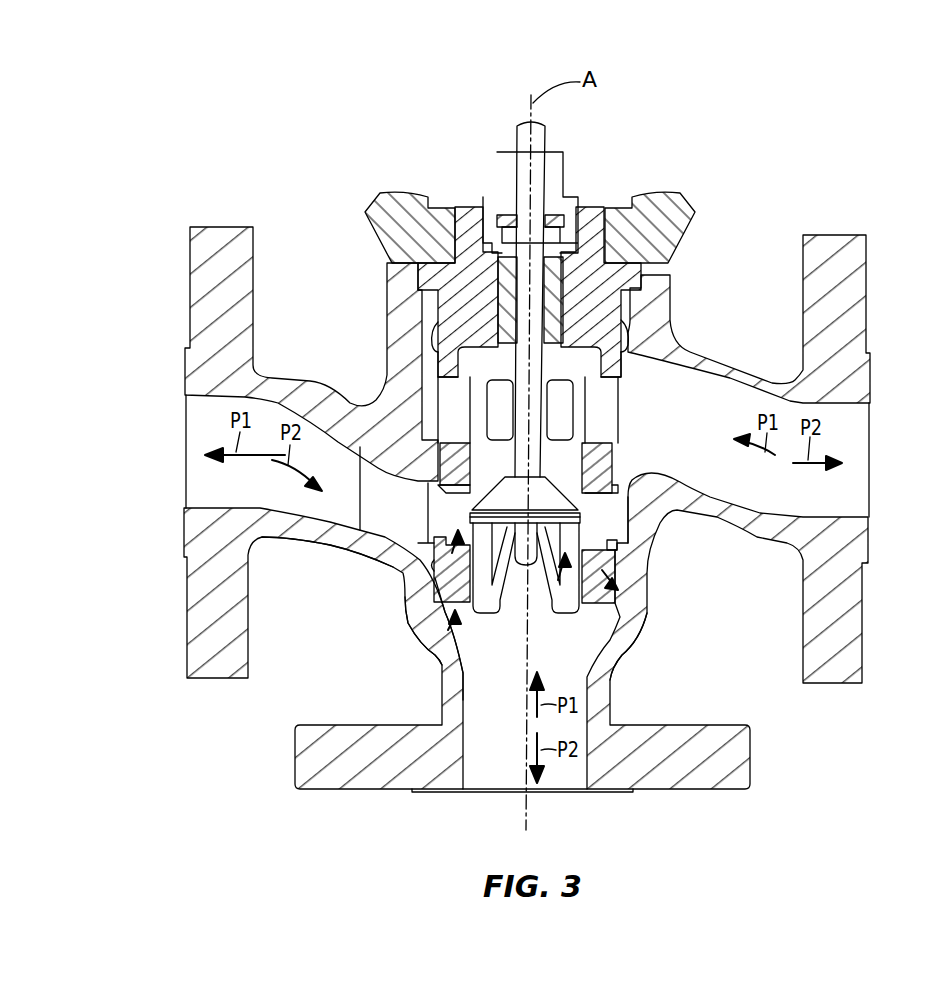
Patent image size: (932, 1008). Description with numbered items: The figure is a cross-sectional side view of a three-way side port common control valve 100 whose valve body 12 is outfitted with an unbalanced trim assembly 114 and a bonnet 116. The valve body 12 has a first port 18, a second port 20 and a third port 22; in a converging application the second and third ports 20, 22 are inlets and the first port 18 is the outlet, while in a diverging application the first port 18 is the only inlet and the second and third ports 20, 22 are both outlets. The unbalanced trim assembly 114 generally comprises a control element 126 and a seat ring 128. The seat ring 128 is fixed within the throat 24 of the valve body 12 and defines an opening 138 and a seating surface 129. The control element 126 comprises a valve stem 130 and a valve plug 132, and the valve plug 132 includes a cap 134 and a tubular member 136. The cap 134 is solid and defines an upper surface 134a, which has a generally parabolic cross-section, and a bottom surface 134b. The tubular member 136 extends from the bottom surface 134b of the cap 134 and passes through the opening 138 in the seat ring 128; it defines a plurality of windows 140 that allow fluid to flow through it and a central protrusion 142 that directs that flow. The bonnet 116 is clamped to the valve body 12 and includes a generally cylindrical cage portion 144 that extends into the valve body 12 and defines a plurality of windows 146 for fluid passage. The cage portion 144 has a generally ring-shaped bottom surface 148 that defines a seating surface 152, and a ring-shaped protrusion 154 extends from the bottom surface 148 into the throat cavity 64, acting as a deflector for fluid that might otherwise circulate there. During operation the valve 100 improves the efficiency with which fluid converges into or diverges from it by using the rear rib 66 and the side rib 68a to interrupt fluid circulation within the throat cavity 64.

The valve 100 is at (661, 85).
The valve body 12 is at (832, 225).
The first port 18 is at (200, 507).
The second port 20 is at (580, 790).
The third port 22 is at (845, 405).
The throat 24 is at (690, 504).
The rear rib 66 is at (633, 497).
The throat cavity 64 is at (403, 590).
The side rib 68a is at (373, 532).
The unbalanced trim assembly 114 is at (440, 648).
The bonnet 116 is at (591, 192).
The control element 126 is at (565, 565).
The seat ring 128 is at (605, 590).
The seating surface 129 is at (490, 600).
The valve stem 130 is at (560, 135).
The valve plug 132 is at (590, 432).
The cap 134 is at (589, 546).
The upper surface 134a is at (558, 488).
The bottom surface 134b is at (617, 553).
The tubular member 136 is at (645, 592).
The opening 138 is at (480, 633).
The windows 140 is at (600, 640).
The central protrusion 142 is at (538, 600).
The cage portion 144 is at (623, 360).
The windows 146 is at (455, 385).
The bottom surface 148 is at (425, 492).
The seating surface 152 is at (465, 415).
The protrusion 154 is at (413, 564).